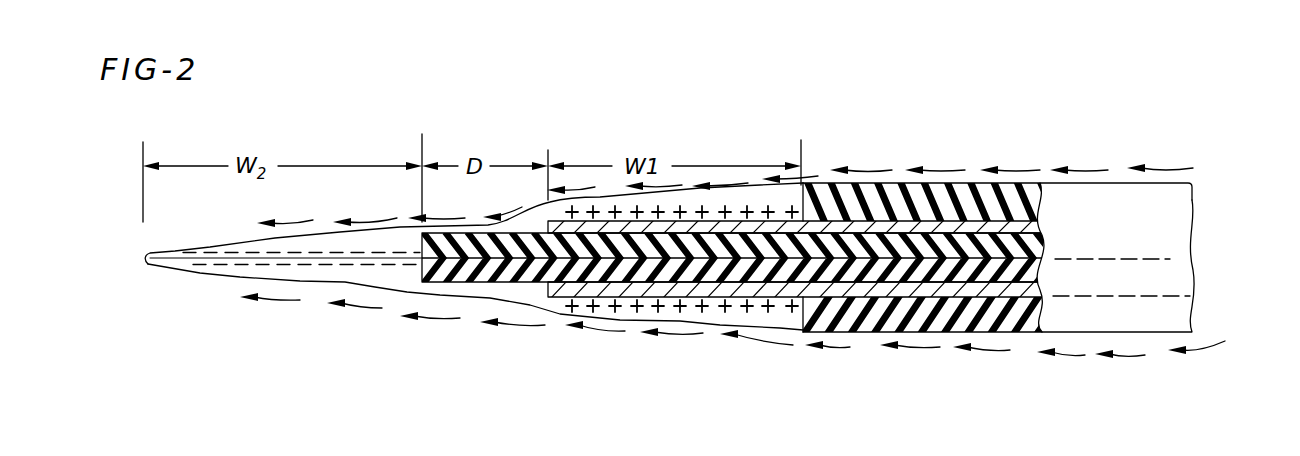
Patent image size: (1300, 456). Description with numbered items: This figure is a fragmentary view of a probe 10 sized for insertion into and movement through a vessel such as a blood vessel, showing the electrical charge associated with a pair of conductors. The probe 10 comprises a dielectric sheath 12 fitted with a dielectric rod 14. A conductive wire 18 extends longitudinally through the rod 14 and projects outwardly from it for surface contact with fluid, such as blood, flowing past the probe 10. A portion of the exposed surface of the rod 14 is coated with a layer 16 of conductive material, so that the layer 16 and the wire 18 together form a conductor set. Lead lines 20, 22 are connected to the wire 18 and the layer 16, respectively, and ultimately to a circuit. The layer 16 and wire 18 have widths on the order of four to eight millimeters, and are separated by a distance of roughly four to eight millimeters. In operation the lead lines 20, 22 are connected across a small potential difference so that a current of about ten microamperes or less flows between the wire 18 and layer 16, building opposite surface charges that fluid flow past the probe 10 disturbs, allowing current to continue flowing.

The probe 10 is at (697, 348).
The dielectric sheath 12 is at (1175, 218).
The dielectric rod 14 is at (1180, 281).
The layer of conductive material 16 is at (625, 222).
The conductive wire 18 is at (300, 262).
The lead line 20 is at (1000, 263).
The lead line 22 is at (890, 187).